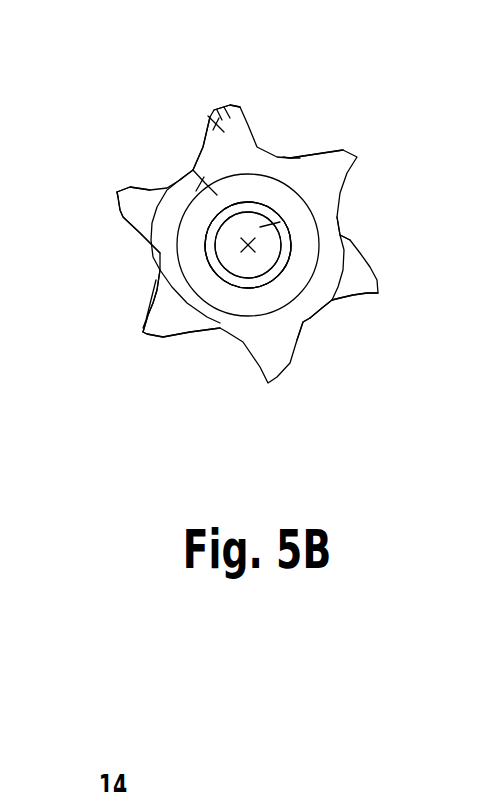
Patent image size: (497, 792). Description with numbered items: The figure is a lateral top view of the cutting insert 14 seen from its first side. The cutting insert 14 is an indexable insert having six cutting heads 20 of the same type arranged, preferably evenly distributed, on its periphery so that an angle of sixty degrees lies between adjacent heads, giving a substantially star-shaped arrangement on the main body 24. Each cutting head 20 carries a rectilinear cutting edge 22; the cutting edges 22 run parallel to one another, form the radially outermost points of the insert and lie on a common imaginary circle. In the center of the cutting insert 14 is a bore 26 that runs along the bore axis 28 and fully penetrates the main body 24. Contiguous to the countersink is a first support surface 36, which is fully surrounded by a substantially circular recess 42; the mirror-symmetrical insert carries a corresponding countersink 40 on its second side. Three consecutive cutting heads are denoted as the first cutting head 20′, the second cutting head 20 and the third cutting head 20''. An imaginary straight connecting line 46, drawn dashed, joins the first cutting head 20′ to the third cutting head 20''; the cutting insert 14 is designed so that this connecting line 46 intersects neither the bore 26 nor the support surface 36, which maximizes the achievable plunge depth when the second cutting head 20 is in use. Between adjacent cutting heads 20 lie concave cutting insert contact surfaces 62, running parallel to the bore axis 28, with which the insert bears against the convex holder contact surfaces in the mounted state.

The cutting insert 14 is at (259, 192).
The cutting head 20 is at (104, 233).
The first cutting head 20′ is at (149, 89).
The third cutting head 20'' is at (157, 381).
The cutting edge 22 is at (81, 189).
The main body 24 is at (351, 330).
The bore 26 is at (318, 240).
The bore axis 28 is at (239, 308).
The support surface 36 is at (166, 145).
The countersink 40 is at (248, 171).
The recess 42 is at (361, 169).
The connecting line 46 is at (100, 301).
The cutting insert contact surface 62 is at (355, 231).